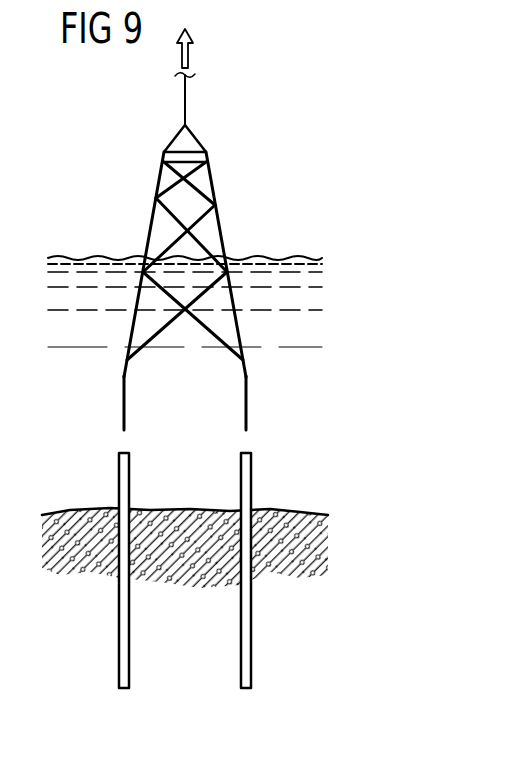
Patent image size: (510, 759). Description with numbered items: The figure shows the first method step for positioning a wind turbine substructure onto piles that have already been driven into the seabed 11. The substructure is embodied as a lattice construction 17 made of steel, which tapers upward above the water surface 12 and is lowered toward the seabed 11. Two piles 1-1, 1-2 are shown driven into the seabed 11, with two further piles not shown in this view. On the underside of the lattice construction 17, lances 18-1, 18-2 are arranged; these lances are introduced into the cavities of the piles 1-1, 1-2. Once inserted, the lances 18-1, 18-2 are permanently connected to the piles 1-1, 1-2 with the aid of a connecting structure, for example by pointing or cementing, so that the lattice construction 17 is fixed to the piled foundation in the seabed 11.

The water surface / sea level 12 is at (103, 257).
The lattice construction 17 is at (220, 232).
The lance 18-1 is at (247, 407).
The lance 18-2 is at (123, 407).
The seabed 11 is at (83, 507).
The pile 1-1 is at (252, 645).
The pile 1-2 is at (118, 645).